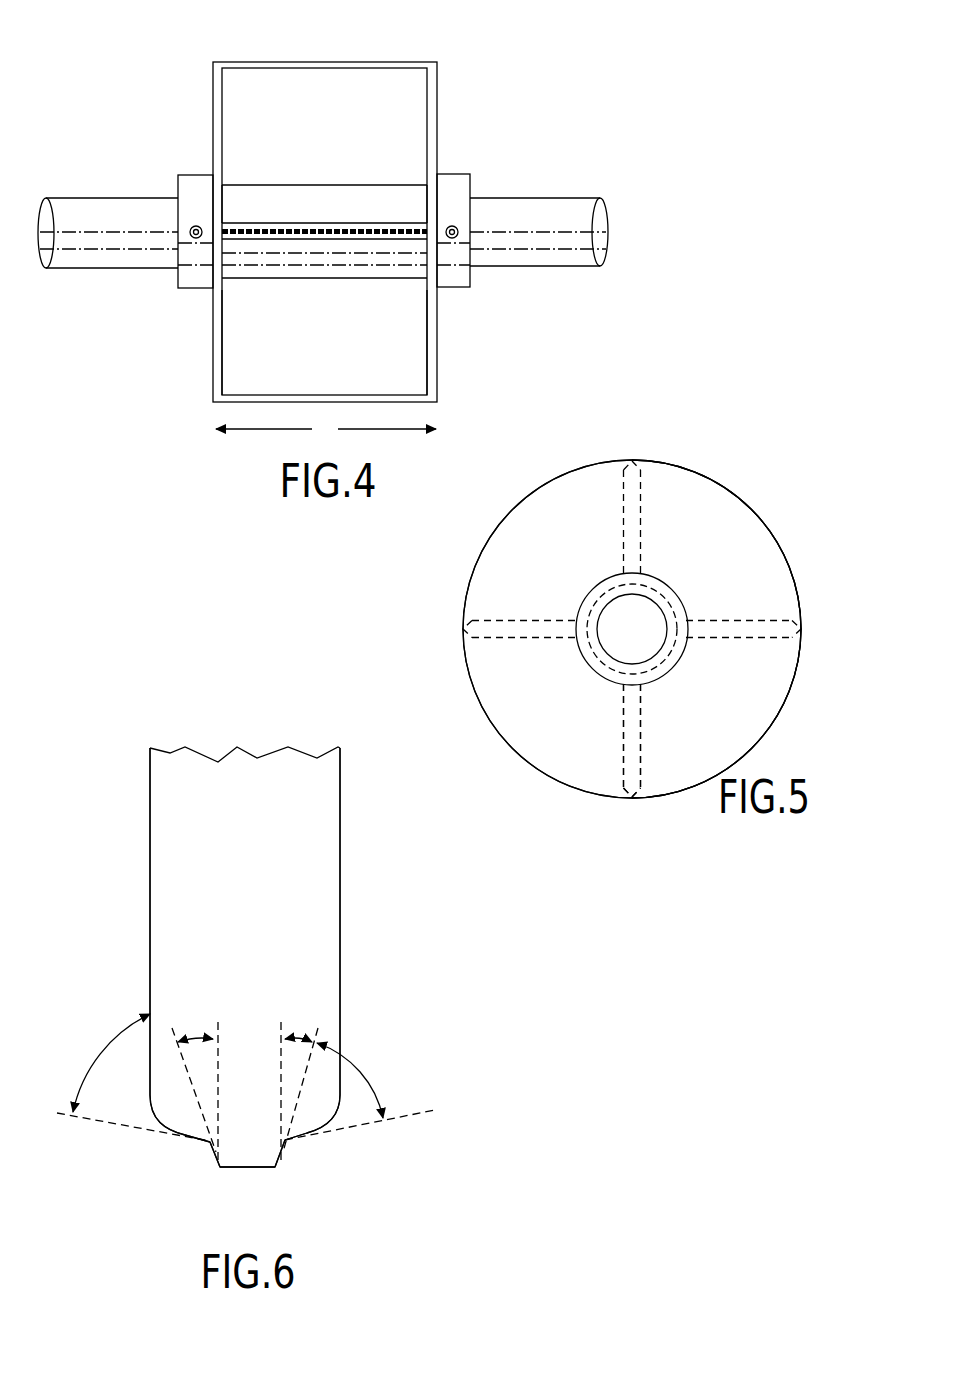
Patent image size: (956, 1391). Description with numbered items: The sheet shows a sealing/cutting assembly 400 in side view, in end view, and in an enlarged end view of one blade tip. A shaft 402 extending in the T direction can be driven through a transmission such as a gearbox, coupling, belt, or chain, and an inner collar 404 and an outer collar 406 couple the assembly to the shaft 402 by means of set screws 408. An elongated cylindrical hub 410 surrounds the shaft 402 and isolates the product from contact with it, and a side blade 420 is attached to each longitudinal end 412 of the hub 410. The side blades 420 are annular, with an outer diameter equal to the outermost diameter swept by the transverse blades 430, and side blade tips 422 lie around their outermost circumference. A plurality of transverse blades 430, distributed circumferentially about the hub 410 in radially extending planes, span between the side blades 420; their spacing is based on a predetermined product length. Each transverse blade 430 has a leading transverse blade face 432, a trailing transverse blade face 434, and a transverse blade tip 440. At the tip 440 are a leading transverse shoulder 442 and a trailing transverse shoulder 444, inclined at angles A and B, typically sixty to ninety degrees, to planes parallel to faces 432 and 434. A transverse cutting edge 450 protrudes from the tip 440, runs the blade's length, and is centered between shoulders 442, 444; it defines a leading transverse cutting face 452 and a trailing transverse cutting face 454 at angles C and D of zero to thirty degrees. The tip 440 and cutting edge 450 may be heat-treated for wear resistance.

In FIG. 4, the sealing/cutting assembly 400 is at (182, 75).
In FIG. 5, the sealing/cutting assembly 400 is at (772, 470).
In FIG. 4, the shaft 402 is at (100, 198).
In FIG. 4, the inner collar 404 is at (193, 175).
In FIG. 4, the outer collar 406 is at (452, 174).
In FIG. 4, the set screws 408 is at (190, 232).
In FIG. 4, the elongated cylindrical hub 410 is at (322, 185).
In FIG. 5, the elongated cylindrical hub 410 is at (592, 652).
In FIG. 4, the longitudinal end 412 is at (228, 185).
In FIG. 4, the side blade 420 is at (229, 350).
In FIG. 5, the side blade 420 is at (760, 700).
In FIG. 5, the side blade tip 422 is at (802, 650).
In FIG. 4, the transverse blade 430 is at (338, 78).
In FIG. 5, the transverse blade 430 is at (618, 733).
In FIG. 6, the transverse blade 430 is at (340, 790).
In FIG. 5, the leading transverse blade face 432 is at (641, 724).
In FIG. 6, the leading transverse blade face 432 is at (340, 836).
In FIG. 5, the trailing transverse blade face 434 is at (623, 712).
In FIG. 6, the trailing transverse blade face 434 is at (149, 782).
In FIG. 5, the transverse blade tip 440 is at (647, 785).
In FIG. 6, the transverse blade tip 440 is at (408, 886).
In FIG. 6, the leading transverse shoulder 442 is at (296, 1137).
In FIG. 6, the trailing transverse shoulder 444 is at (178, 1134).
In FIG. 6, the transverse cutting edge 450 is at (247, 1168).
In FIG. 6, the leading transverse cutting face 452 is at (283, 1154).
In FIG. 6, the trailing transverse cutting face 454 is at (213, 1154).